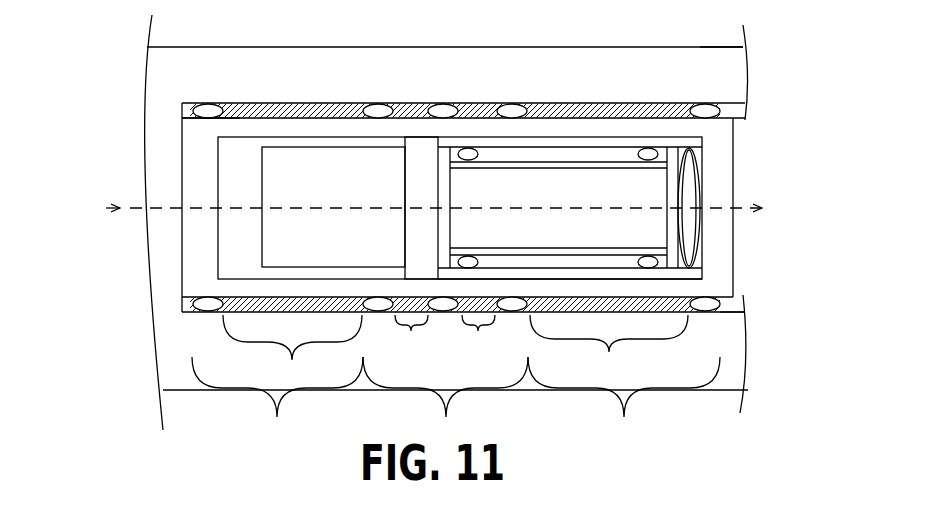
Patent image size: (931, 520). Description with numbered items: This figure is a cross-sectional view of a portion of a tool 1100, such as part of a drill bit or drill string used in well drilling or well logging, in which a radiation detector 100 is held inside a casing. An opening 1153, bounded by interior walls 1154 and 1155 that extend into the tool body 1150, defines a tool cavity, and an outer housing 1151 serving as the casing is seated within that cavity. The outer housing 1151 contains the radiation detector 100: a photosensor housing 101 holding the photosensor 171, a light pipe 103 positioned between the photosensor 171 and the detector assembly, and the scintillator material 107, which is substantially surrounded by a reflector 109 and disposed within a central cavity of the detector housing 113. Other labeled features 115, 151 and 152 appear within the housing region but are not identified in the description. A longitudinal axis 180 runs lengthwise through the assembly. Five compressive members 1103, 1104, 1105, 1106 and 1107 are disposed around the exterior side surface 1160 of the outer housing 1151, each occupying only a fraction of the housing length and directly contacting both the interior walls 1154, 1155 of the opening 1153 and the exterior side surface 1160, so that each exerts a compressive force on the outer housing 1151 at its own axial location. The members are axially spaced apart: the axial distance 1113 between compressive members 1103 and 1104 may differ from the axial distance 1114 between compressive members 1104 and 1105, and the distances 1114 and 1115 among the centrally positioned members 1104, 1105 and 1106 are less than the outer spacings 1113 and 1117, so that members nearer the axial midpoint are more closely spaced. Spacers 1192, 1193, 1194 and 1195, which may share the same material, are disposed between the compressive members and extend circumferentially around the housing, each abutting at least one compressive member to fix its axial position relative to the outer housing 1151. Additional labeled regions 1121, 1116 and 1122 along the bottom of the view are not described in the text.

The tool 1100 is at (413, 222).
The radiation detector 100 is at (713, 137).
The compressive member 1103 is at (206, 106).
The compressive member 1104 is at (383, 107).
The compressive member 1105 is at (443, 106).
The compressive member 1106 is at (509, 108).
The compressive member 1107 is at (707, 108).
The interior wall 1154 is at (480, 108).
The tool body 1150 is at (722, 95).
The outer housing 1151 is at (723, 182).
The opening 1153 is at (747, 248).
The interior wall 1155 is at (723, 312).
The exterior side surface 1160 is at (237, 119).
The spacer 1192 is at (222, 310).
The spacer 1193 is at (373, 310).
The spacer 1194 is at (510, 310).
The spacer 1195 is at (647, 308).
The photosensor housing 101 is at (460, 208).
The photosensor 171 is at (333, 207).
The light pipe 103 is at (418, 192).
The scintillator material 107 is at (570, 207).
The upper rail 115 is at (443, 224).
The reflector 109 is at (520, 253).
The detector housing 113 is at (580, 272).
The first bearing 151 is at (472, 158).
The second bearing 152 is at (645, 158).
The longitudinal axis 180 is at (130, 208).
The axial distance 1113 is at (292, 348).
The axial distance 1114 is at (413, 336).
The axial distance 1115 is at (482, 336).
The axial spacing 1117 is at (609, 347).
The proximal region 1121 is at (277, 397).
The middle region 1116 is at (445, 397).
The distal region 1122 is at (624, 397).